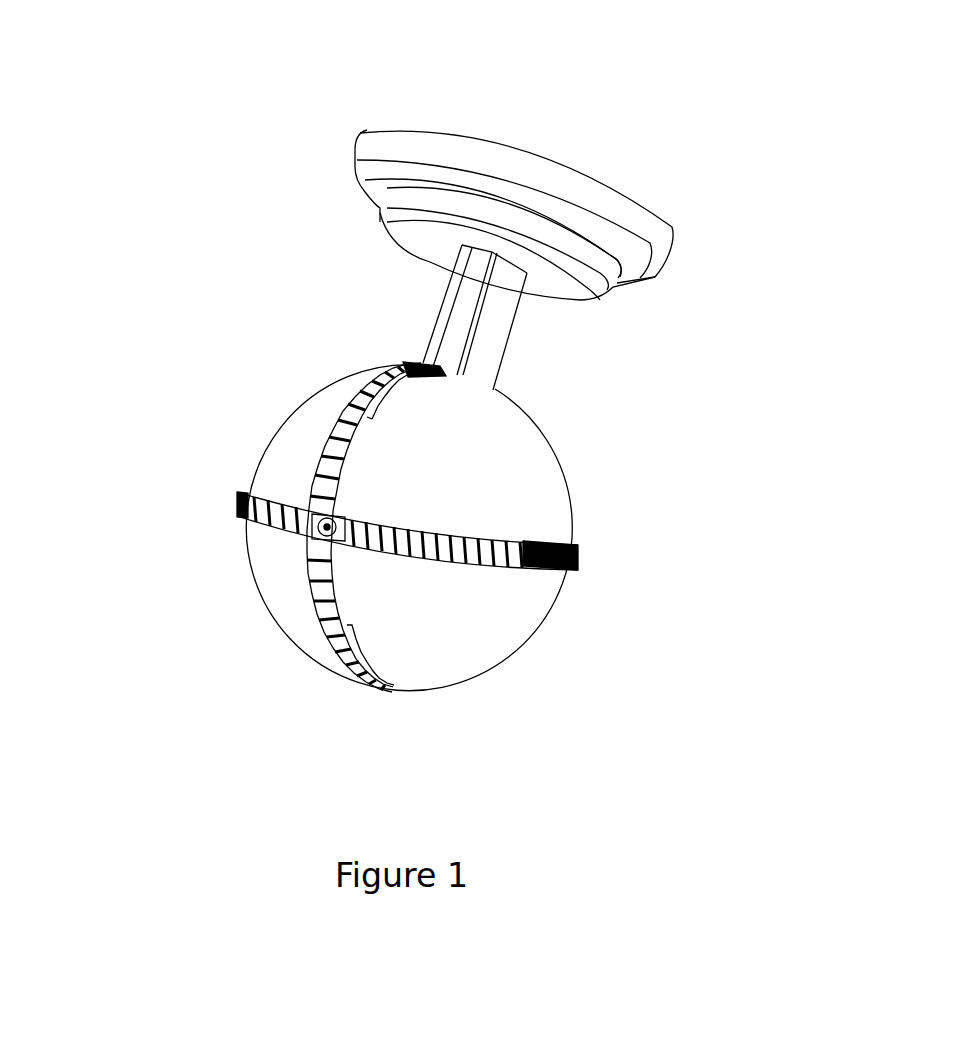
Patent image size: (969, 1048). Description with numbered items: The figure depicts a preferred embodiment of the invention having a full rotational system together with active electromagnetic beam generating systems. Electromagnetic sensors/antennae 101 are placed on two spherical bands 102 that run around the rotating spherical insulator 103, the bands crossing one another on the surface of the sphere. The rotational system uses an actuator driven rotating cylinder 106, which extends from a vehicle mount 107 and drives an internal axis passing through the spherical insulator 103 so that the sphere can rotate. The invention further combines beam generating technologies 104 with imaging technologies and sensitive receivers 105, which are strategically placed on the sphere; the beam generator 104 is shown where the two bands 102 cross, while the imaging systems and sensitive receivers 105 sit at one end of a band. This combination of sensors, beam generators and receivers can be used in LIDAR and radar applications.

The electromagnetic sensors/antennae 101 is at (485, 537).
The spherical bands 102 is at (537, 568).
The rotating spherical insulator 103 is at (440, 610).
The beam generating technologies 104 is at (317, 538).
The imaging technologies and sensitive receivers 105 is at (245, 492).
The Rotating cylinder 106 is at (382, 208).
The Vehicle Mount 107 is at (545, 165).